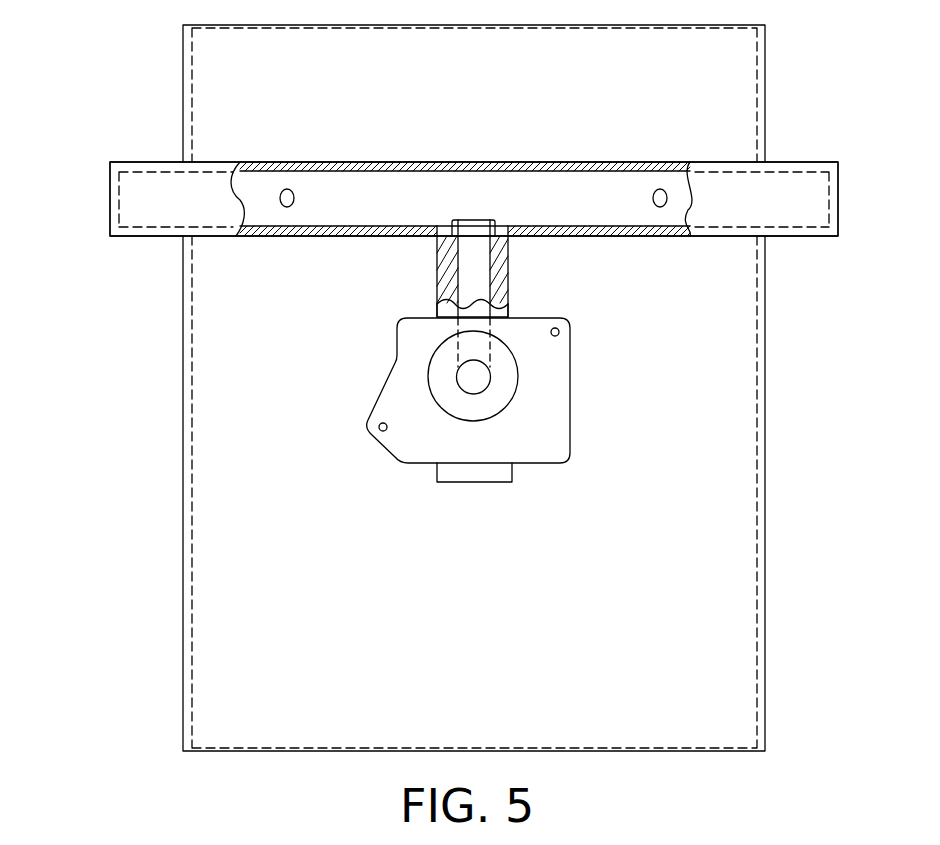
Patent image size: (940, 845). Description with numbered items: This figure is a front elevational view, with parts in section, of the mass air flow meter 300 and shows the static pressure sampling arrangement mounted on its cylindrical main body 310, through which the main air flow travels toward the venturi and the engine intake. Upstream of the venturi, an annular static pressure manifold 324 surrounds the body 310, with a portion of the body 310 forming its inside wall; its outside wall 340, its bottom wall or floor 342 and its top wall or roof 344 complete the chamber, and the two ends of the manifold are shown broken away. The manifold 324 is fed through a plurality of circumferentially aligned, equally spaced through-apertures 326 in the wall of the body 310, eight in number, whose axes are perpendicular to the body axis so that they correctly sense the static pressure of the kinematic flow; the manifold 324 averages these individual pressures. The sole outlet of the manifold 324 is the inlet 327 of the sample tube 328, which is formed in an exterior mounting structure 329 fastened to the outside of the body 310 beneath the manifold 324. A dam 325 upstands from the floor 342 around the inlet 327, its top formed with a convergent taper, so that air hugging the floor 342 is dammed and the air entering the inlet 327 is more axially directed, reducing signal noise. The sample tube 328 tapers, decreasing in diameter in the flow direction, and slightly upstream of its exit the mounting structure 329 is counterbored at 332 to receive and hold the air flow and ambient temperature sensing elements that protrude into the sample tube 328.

The mass air flow meter 300 is at (816, 96).
The main body 310 is at (183, 57).
The static pressure manifold 324 is at (817, 152).
The dam 325 is at (452, 221).
The through-apertures 326 is at (293, 196).
The inlet 327 is at (488, 220).
The sample tube 328 is at (455, 295).
The mounting structure 329 is at (508, 302).
The counterbore 332 is at (512, 382).
The outside wall 340 is at (110, 206).
The floor 342 is at (332, 232).
The roof 344 is at (355, 163).